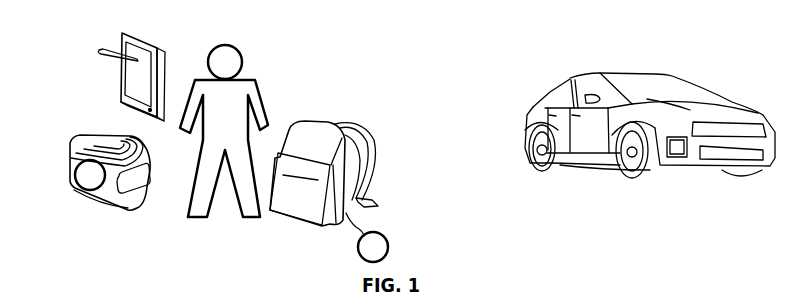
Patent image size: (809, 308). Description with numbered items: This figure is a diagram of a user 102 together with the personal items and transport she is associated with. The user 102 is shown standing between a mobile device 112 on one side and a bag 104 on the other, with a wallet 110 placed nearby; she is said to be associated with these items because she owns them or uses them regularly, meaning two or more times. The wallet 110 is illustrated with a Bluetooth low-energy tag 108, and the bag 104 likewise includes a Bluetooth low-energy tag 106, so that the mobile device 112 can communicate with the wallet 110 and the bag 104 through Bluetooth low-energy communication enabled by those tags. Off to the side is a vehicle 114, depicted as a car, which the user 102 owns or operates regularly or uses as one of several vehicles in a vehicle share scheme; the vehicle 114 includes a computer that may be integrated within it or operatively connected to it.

The user 102 is at (247, 88).
The bag 104 is at (335, 122).
The BLE tag 106 is at (388, 241).
The BLE tag 108 is at (74, 189).
The wallet 110 is at (78, 143).
The mobile device 112 is at (122, 40).
The vehicle 114 is at (627, 183).